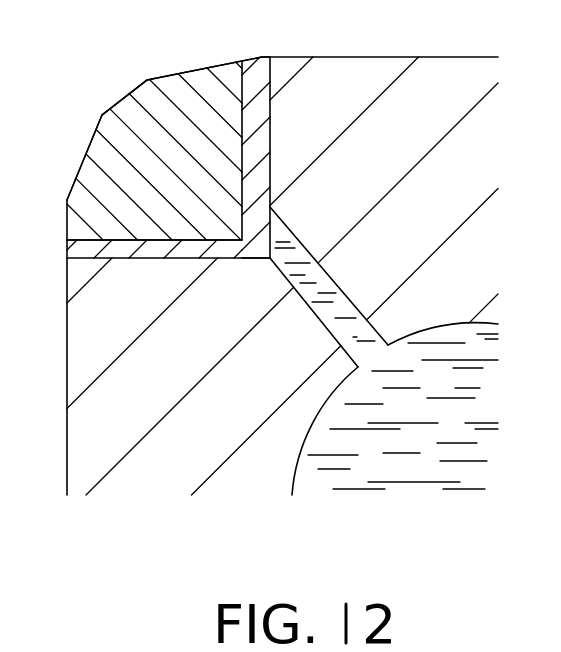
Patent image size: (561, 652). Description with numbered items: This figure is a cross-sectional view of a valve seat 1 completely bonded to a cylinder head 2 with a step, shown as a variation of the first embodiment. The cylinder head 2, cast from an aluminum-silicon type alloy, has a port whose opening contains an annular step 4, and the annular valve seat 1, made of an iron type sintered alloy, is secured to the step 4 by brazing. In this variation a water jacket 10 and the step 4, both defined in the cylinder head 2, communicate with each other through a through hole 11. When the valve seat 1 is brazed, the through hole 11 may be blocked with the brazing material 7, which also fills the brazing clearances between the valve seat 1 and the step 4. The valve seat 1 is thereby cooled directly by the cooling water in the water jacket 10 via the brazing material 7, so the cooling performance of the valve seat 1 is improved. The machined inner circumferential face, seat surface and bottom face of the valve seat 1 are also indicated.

The valve seat 1 is at (161, 78).
The cylinder head 2 is at (362, 67).
The step 4 is at (141, 252).
The brazing material 7 is at (258, 112).
The water jacket 10 is at (448, 329).
The through hole 11 is at (324, 279).